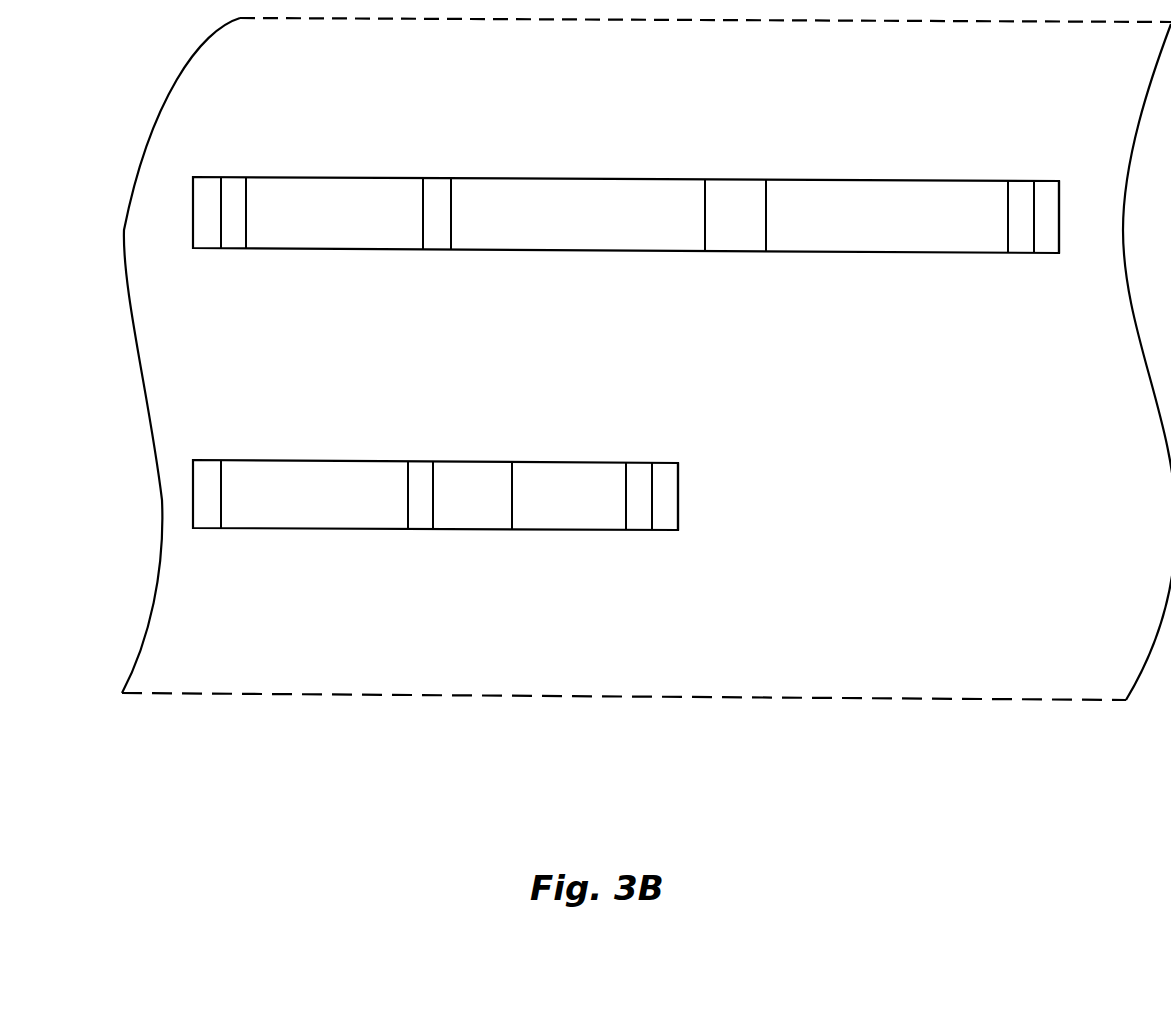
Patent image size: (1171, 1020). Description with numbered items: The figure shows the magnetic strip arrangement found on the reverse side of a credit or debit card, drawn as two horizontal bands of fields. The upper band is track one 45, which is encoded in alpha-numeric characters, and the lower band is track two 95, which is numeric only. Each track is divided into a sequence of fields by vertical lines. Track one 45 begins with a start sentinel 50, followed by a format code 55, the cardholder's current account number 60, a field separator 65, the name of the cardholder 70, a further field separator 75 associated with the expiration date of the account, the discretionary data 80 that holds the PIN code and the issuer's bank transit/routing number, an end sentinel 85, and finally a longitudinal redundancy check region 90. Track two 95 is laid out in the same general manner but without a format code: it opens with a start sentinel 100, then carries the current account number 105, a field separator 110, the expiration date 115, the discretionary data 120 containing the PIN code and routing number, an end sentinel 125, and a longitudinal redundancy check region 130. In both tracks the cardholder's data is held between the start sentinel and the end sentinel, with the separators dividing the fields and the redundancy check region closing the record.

The track one 45 is at (570, 192).
The start sentinel 50 is at (202, 250).
The format code 55 is at (235, 251).
The current account number 60 is at (347, 250).
The field separator 65 is at (434, 252).
The name of the cardholder 70 is at (566, 254).
The expiration date 75 is at (730, 256).
The discretionary data 80 is at (879, 255).
The end sentinel 85 is at (1021, 257).
The longitudinal redundancy check region 90 is at (1046, 257).
The track two 95 is at (380, 469).
The start sentinel 100 is at (206, 531).
The current account number 105 is at (320, 531).
The field separator 110 is at (422, 532).
The expiration date 115 is at (471, 533).
The discretionary data 120 is at (567, 533).
The end sentinel 125 is at (641, 492).
The longitudinal redundancy check region 130 is at (684, 519).